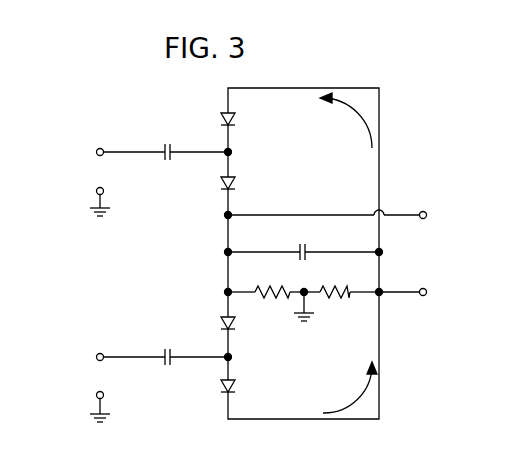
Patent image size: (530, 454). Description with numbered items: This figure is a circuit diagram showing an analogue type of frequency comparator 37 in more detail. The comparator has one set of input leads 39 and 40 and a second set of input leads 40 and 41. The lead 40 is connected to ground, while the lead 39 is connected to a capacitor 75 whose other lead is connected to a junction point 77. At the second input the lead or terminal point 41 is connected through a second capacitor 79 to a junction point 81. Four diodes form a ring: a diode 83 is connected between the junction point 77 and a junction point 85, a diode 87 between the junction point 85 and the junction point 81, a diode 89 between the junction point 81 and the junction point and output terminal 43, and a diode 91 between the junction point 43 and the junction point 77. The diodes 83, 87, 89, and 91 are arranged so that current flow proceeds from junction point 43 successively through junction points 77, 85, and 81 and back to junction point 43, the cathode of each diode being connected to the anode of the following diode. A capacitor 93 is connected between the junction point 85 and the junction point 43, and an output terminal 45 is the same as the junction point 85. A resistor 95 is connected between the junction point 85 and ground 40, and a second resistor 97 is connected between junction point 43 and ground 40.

The frequency comparator 37 is at (437, 158).
The input lead 39 is at (103, 149).
The input lead 40 is at (310, 306).
The input lead or terminal point 41 is at (103, 353).
The junction point and output terminal 43 is at (427, 292).
The output terminal 45 is at (427, 215).
The capacitor 75 is at (168, 150).
The junction point 77 is at (232, 152).
The second capacitor 79 is at (168, 355).
The junction point 81 is at (232, 357).
The diode 83 is at (235, 181).
The junction point 85 is at (226, 252).
The diode 87 is at (235, 324).
The diode 89 is at (235, 390).
The diode 91 is at (235, 121).
The capacitor 93 is at (303, 250).
The resistor 95 is at (274, 288).
The second resistor 97 is at (337, 288).